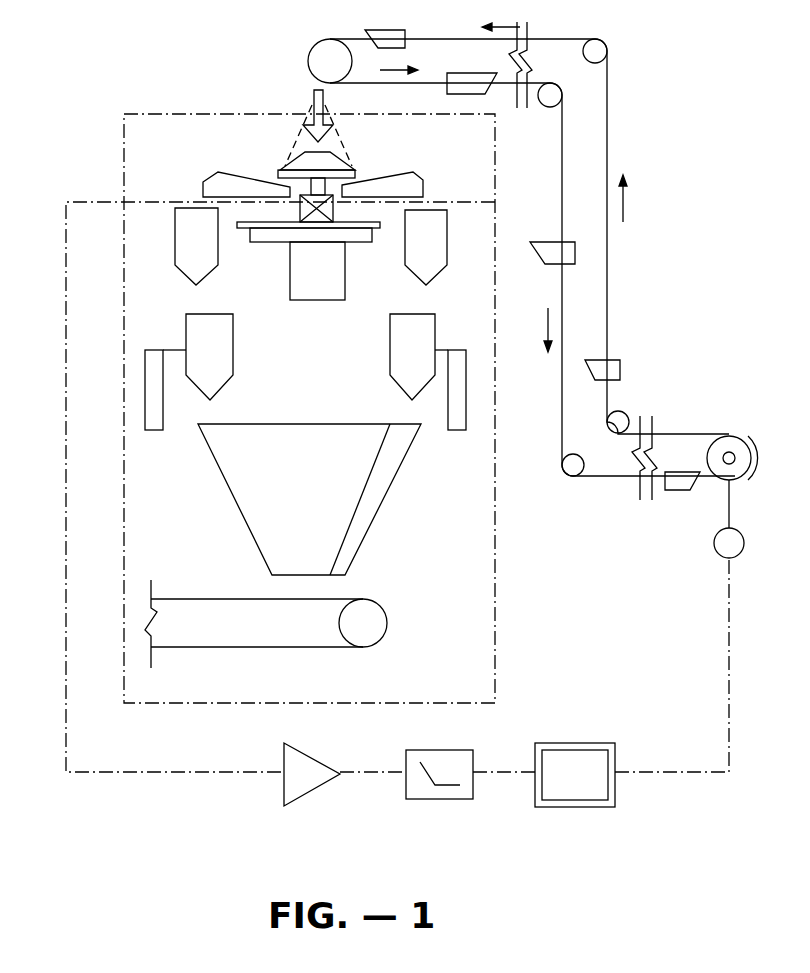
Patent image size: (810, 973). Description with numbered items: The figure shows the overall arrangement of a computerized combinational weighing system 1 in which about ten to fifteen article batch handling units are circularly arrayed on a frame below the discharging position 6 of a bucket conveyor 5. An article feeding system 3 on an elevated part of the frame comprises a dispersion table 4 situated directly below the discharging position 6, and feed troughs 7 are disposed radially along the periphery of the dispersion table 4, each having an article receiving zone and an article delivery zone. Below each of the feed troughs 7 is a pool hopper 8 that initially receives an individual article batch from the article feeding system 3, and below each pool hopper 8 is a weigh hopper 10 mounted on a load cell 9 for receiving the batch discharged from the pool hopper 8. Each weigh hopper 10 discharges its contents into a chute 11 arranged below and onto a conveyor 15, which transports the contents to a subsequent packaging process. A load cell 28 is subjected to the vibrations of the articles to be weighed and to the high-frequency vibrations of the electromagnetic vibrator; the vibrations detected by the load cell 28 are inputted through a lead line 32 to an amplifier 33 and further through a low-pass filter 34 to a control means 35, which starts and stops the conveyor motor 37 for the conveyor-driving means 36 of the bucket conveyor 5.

The computerized combinational weighing system 1 is at (497, 552).
The article feeding system 3 is at (258, 150).
The dispersion table 4 is at (352, 166).
The bucket conveyor 5 is at (607, 108).
The discharging position 6 is at (316, 45).
The feed troughs 7 is at (414, 181).
The pool hopper 8 is at (440, 230).
The load cell 9 is at (470, 398).
The weigh hopper 10 is at (196, 330).
The chute 11 is at (237, 485).
The conveyor 15 is at (256, 648).
The load cell 28 is at (300, 210).
The lead line 32 is at (66, 586).
The amplifier 33 is at (318, 786).
The low-pass filter 34 is at (440, 800).
The control means 35 is at (566, 743).
The conveyor-driving means 36 is at (729, 436).
The conveyor motor 37 is at (714, 543).